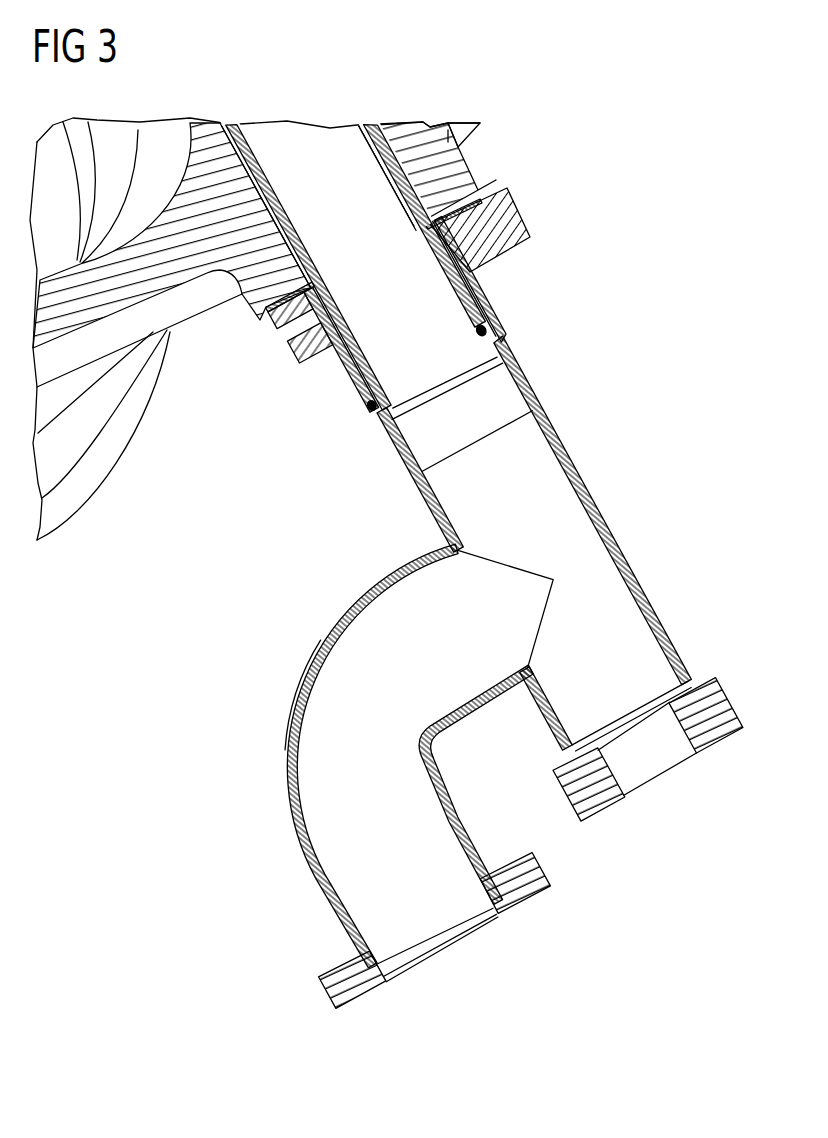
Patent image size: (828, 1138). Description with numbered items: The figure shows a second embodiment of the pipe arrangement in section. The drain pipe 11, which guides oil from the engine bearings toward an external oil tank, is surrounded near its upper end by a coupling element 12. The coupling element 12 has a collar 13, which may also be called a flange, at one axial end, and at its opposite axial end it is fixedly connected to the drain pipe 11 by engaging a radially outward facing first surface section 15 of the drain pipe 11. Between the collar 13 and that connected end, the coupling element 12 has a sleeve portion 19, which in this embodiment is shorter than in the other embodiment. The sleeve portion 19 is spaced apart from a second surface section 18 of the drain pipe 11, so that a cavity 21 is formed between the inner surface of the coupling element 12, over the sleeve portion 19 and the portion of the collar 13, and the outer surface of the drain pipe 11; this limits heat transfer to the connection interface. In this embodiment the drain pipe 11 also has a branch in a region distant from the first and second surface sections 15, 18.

The drain pipe 11 is at (429, 667).
The coupling element 12 is at (406, 315).
The collar 13 is at (477, 230).
The first surface section 15 is at (481, 330).
The second surface section 18 is at (360, 236).
The sleeve portion 19 is at (372, 405).
The cavity 21 is at (305, 323).